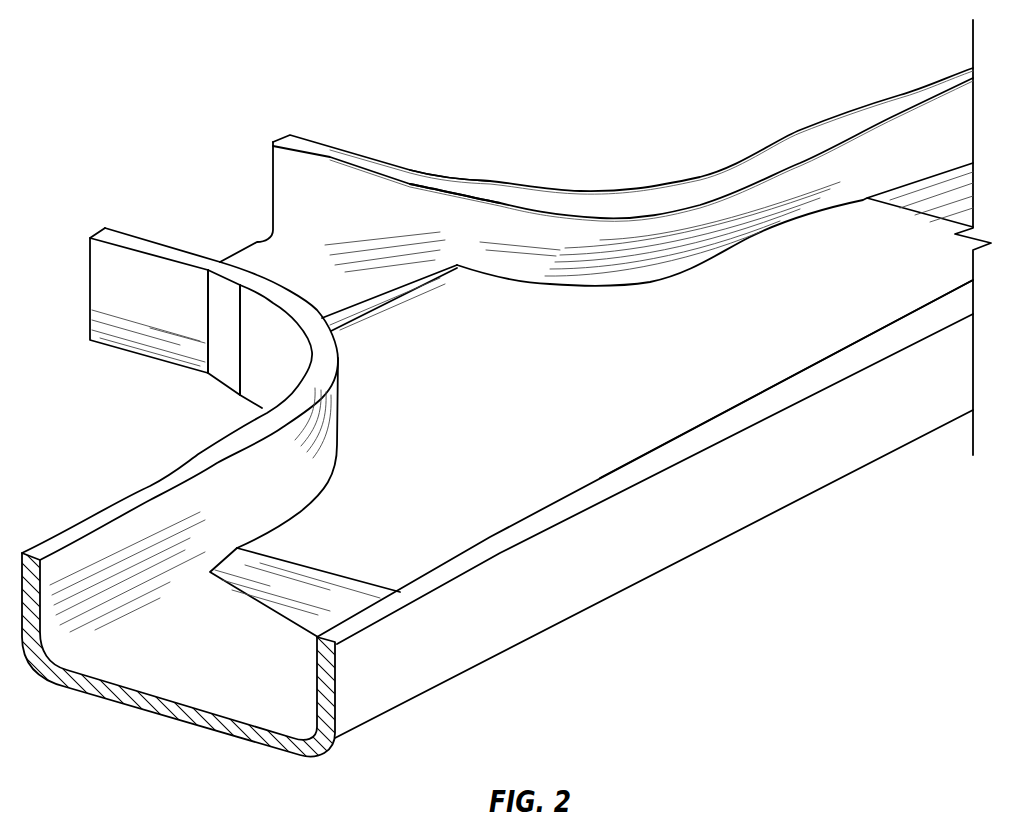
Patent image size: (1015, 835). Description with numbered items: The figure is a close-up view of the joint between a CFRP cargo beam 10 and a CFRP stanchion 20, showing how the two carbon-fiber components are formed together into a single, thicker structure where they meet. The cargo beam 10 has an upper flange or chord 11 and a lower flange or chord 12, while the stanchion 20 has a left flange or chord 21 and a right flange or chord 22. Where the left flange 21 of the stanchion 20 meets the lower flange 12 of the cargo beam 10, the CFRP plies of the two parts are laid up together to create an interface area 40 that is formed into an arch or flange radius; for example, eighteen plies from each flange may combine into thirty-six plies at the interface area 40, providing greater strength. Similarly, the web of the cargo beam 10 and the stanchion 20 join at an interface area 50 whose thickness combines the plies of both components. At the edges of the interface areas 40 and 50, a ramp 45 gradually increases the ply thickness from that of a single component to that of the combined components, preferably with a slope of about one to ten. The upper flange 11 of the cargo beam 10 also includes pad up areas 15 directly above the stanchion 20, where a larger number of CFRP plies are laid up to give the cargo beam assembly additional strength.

The CFRP cargo beam 10 is at (183, 688).
The upper flange or chord 11 is at (483, 640).
The lower flange or chord 12 is at (115, 530).
The pad up areas 15 is at (773, 398).
The CFRP stanchion 20 is at (248, 243).
The left flange or chord 21 is at (330, 148).
The right flange or chord 22 is at (128, 240).
The interface area 40 is at (500, 200).
The ramp 45 is at (440, 170).
The interface area 50 is at (503, 421).